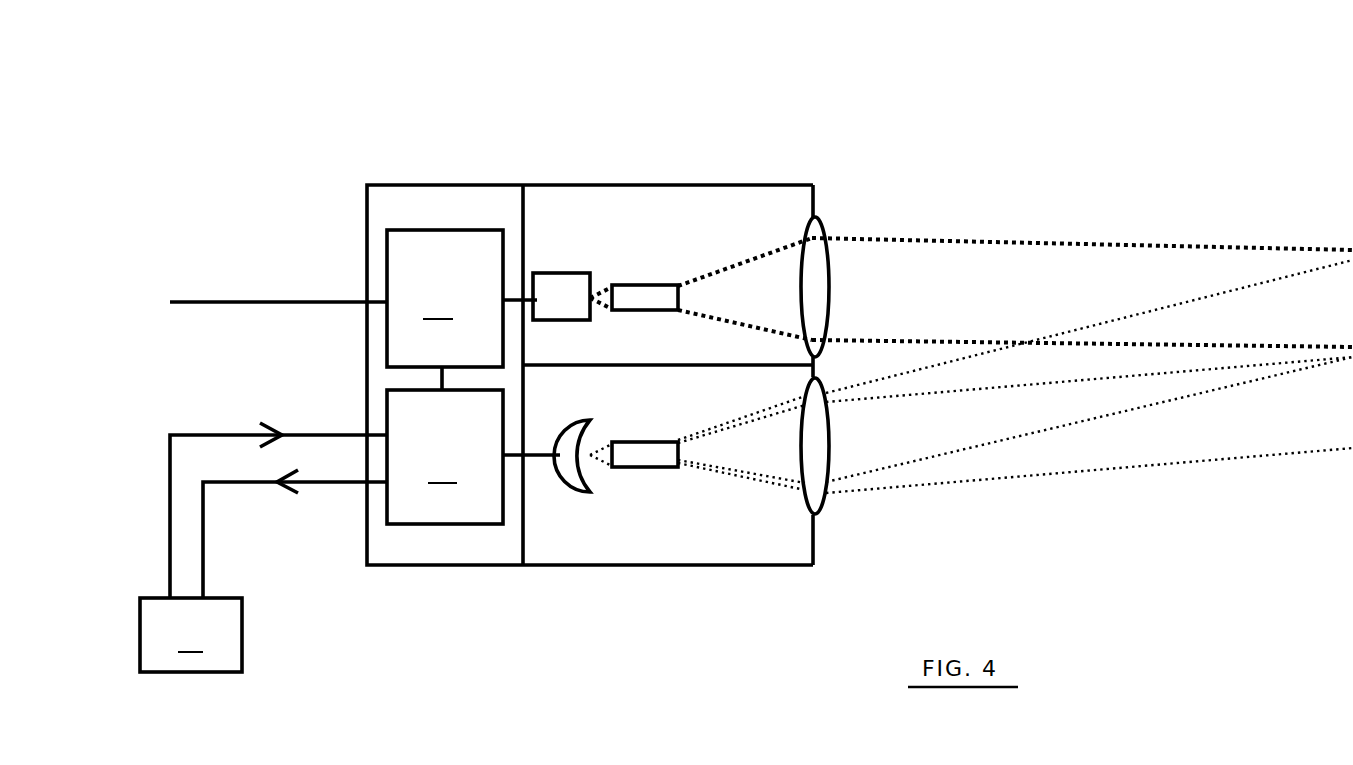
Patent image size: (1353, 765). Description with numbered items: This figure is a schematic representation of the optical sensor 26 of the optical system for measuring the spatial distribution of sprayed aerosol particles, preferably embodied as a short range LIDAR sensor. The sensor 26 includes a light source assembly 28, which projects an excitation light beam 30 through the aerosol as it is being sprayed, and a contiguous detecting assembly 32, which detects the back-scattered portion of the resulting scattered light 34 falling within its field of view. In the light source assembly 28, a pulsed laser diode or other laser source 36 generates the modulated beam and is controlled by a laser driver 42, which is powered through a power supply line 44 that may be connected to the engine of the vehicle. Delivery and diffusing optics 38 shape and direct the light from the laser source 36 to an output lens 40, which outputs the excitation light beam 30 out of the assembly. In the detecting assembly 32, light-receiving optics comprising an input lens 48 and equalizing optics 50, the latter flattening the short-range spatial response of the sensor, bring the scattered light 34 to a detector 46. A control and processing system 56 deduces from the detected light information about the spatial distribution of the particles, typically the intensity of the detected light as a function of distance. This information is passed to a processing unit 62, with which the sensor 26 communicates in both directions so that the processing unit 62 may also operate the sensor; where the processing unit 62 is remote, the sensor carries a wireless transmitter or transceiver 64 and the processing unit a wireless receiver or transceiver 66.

The optical sensor 26 is at (415, 156).
The light source assembly 28 is at (740, 180).
The excitation light beam 30 is at (970, 260).
The detecting assembly 32 is at (794, 565).
The scattered light 34 is at (963, 487).
The laser source 36 is at (558, 293).
The delivery and diffusing optics 38 is at (645, 295).
The output lens 40 is at (813, 255).
The laser driver 42 is at (462, 310).
The power supply line 44 is at (237, 300).
The detector 46 is at (568, 478).
The input lens 48 is at (820, 507).
The equalizing optics 50 is at (658, 463).
The control and processing system 56 is at (473, 457).
The processing unit 62 is at (191, 635).
The wireless transmitter or transceiver 64 is at (387, 483).
The wireless receiver or transceiver 66 is at (207, 597).